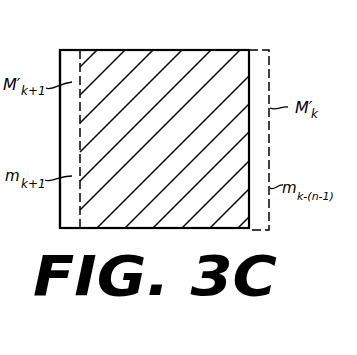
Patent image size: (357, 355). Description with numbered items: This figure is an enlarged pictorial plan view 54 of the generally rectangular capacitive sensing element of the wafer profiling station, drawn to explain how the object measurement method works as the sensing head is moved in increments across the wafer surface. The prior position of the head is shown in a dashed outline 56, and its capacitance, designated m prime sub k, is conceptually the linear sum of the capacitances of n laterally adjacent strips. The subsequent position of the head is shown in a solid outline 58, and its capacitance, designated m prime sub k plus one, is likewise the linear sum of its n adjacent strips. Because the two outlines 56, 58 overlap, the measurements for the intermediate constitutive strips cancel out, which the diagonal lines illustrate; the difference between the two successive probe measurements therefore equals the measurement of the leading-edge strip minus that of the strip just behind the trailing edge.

The enlarged pictorial plan view of the generally rectangular capacitive sensing ele 54 is at (143, 38).
The dashed outline 56 is at (269, 50).
The solid outline 58 is at (60, 50).